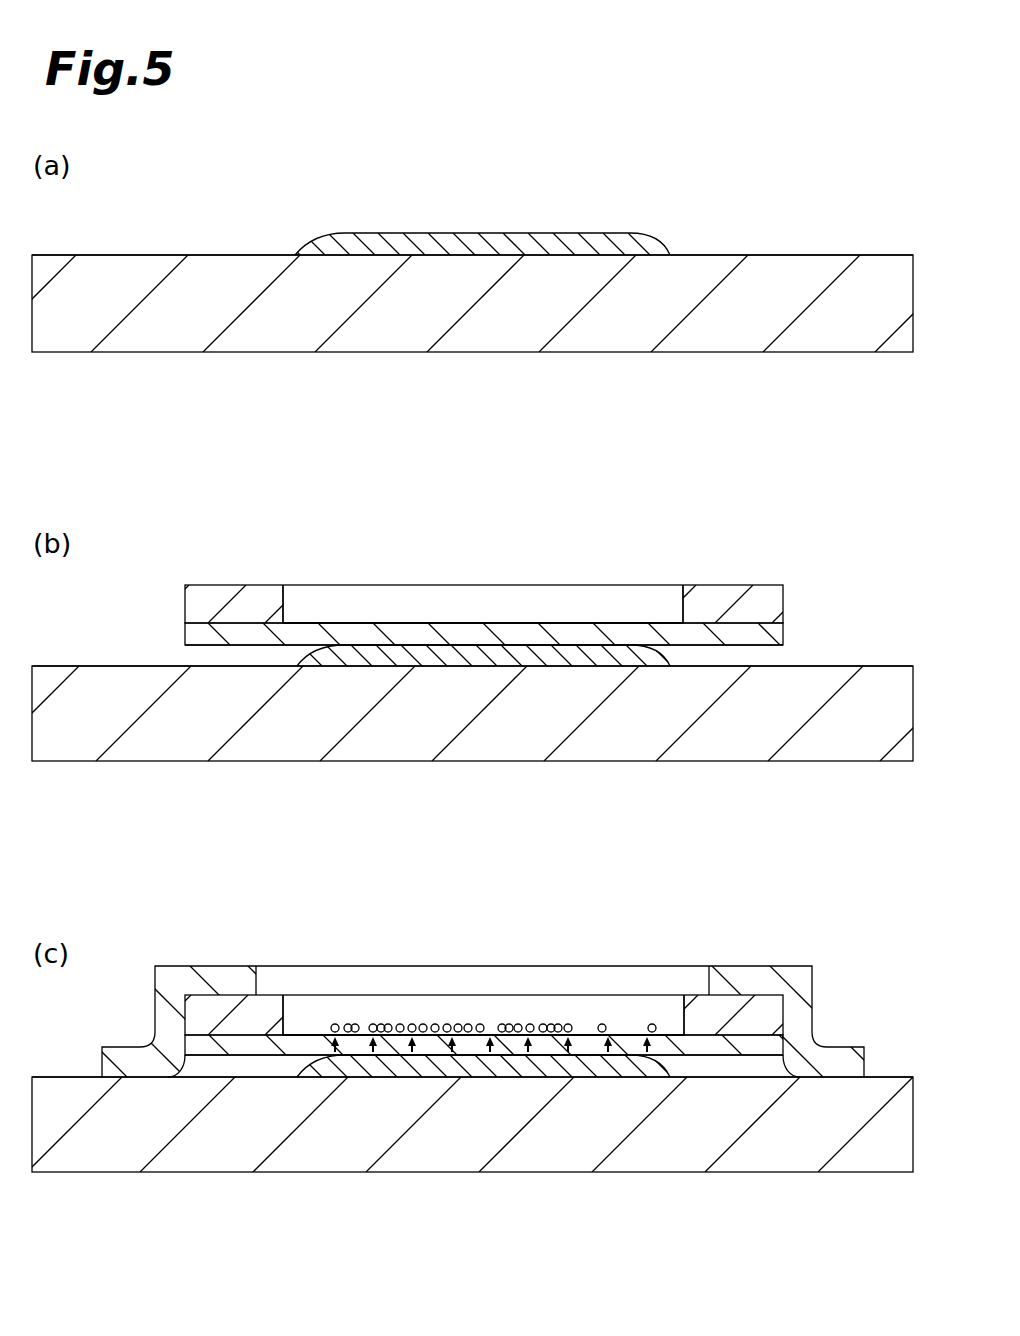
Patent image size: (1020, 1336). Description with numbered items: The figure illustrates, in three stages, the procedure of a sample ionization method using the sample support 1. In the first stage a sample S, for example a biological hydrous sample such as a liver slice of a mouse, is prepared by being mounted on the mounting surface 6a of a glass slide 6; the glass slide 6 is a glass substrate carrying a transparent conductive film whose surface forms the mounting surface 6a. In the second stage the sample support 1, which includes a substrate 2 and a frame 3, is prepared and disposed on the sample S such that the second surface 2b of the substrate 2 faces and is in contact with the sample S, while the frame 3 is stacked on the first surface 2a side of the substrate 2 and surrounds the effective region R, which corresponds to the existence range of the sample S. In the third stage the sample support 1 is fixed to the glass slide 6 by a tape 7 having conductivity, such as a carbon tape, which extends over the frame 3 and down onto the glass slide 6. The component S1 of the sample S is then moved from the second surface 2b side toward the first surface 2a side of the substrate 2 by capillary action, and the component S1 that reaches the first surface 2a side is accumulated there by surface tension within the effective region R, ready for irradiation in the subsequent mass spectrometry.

The sample support 1 is at (497, 870).
The substrate 2 is at (783, 635).
The first surface 2a is at (298, 622).
The second surface 2b is at (290, 647).
The frame 3 is at (783, 602).
The glass slide 6 is at (913, 315).
The mounting surface 6a is at (845, 256).
The tape 7 is at (128, 1048).
The effective region R is at (648, 613).
The sample S is at (604, 234).
The component of the sample S1 is at (569, 1024).